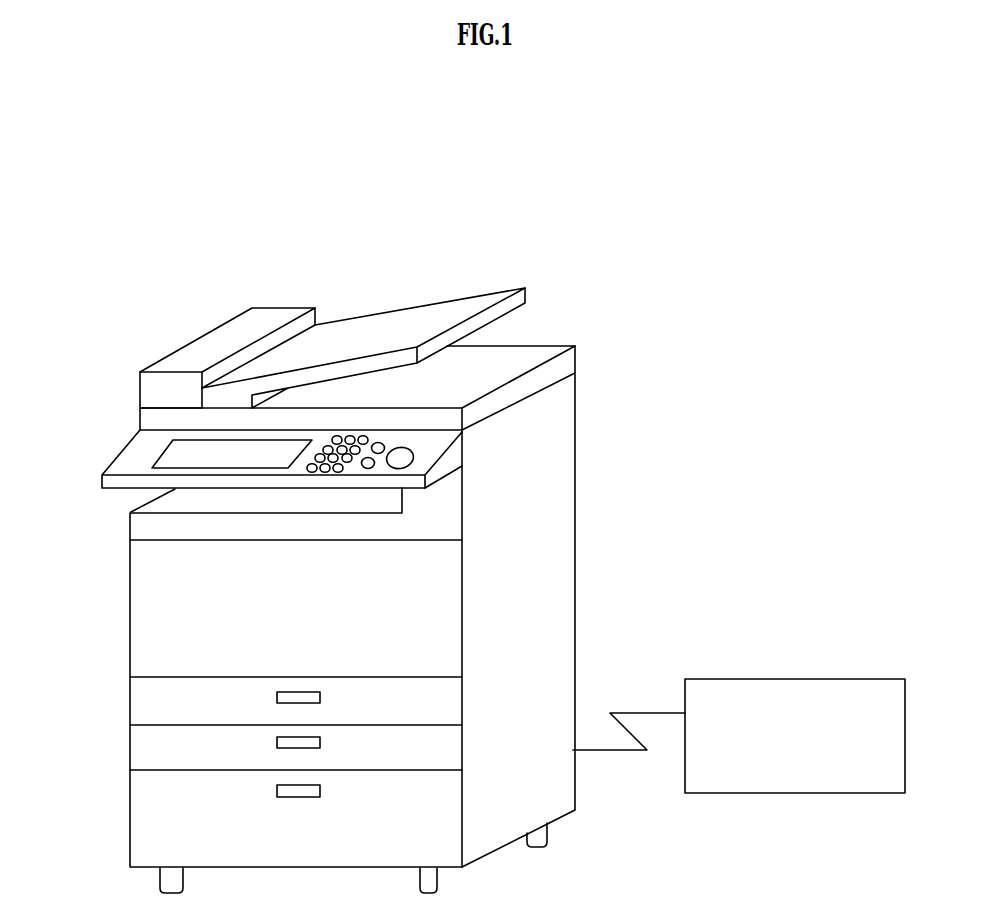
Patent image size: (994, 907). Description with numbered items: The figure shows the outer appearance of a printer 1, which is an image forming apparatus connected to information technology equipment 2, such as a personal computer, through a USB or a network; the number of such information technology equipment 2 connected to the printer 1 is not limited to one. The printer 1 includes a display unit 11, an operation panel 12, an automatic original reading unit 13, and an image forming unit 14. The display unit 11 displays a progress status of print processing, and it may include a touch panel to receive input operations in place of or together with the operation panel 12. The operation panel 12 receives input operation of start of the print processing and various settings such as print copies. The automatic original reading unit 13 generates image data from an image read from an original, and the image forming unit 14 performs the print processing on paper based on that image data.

The printer 1 is at (345, 555).
The information technology equipment 2 is at (845, 679).
The display unit 11 is at (182, 457).
The operation panel 12 is at (350, 427).
The automatic original reading unit 13 is at (313, 308).
The image forming unit 14 is at (158, 603).